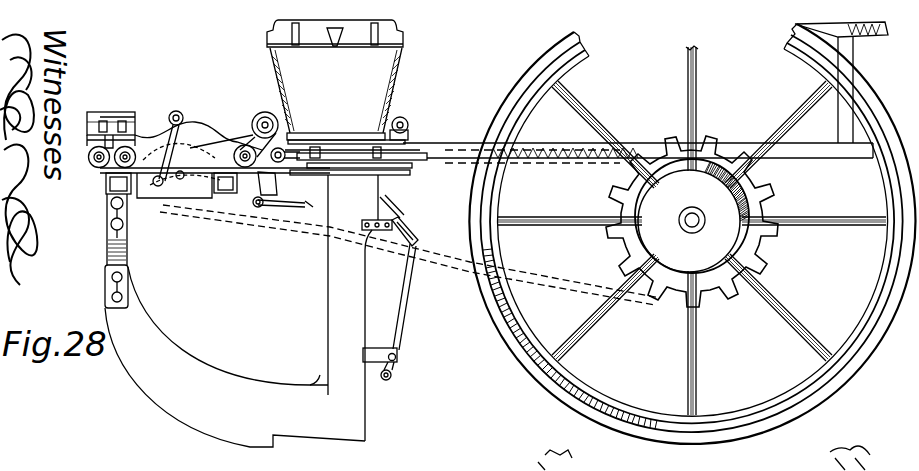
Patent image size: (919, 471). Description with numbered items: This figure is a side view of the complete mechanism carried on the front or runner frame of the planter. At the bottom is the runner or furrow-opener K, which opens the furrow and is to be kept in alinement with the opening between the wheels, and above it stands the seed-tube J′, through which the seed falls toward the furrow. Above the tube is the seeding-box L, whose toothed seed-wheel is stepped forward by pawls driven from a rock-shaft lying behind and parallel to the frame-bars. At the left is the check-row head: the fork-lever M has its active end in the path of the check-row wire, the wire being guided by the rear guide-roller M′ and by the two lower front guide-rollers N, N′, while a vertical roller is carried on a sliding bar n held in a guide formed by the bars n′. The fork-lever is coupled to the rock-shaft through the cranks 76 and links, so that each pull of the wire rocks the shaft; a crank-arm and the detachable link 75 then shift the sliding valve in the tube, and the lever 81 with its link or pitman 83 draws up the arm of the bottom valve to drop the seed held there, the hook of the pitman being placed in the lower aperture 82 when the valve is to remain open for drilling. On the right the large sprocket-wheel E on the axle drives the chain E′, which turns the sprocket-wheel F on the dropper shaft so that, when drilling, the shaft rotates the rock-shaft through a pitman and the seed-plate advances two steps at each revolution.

The sprocket-wheel E is at (753, 200).
The sprocket-chain E′ is at (410, 255).
The seeding-box L is at (336, 82).
The seed-tube J′ is at (335, 298).
The runner or furrow-opener K is at (235, 357).
The sprocket-wheel F is at (168, 212).
The fork-lever M is at (183, 132).
The rear guide-roller M′ is at (278, 108).
The front guide-roller N is at (89, 160).
The front guide-roller N′ is at (106, 174).
The sliding bar n is at (122, 121).
The guide bar n′ is at (87, 123).
The detachable link 75 is at (280, 203).
The crank 76 is at (178, 115).
The lever 81 is at (401, 219).
The lower aperture 82 is at (392, 375).
The link or pitman 83 is at (400, 305).